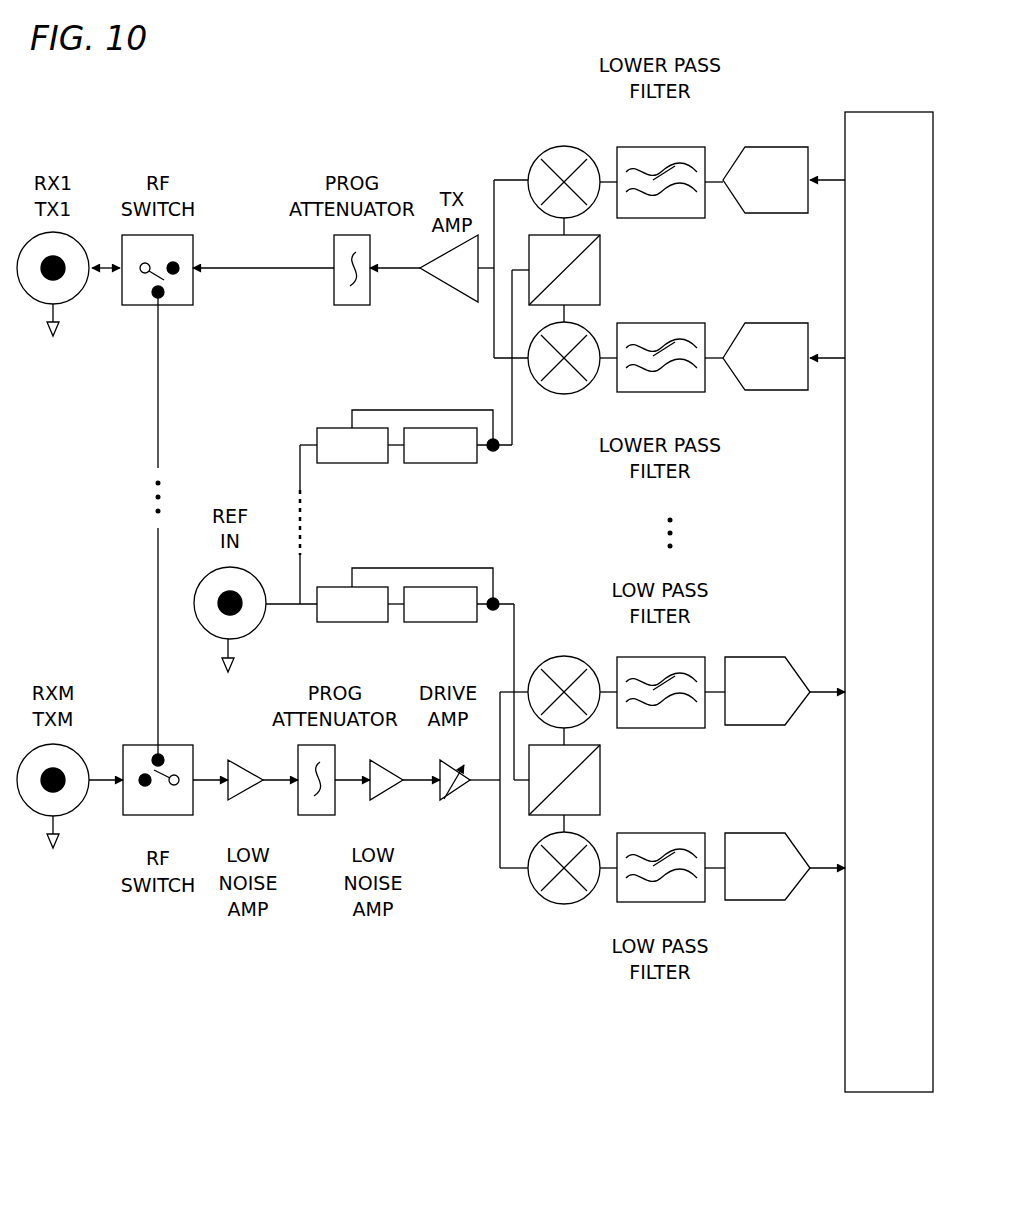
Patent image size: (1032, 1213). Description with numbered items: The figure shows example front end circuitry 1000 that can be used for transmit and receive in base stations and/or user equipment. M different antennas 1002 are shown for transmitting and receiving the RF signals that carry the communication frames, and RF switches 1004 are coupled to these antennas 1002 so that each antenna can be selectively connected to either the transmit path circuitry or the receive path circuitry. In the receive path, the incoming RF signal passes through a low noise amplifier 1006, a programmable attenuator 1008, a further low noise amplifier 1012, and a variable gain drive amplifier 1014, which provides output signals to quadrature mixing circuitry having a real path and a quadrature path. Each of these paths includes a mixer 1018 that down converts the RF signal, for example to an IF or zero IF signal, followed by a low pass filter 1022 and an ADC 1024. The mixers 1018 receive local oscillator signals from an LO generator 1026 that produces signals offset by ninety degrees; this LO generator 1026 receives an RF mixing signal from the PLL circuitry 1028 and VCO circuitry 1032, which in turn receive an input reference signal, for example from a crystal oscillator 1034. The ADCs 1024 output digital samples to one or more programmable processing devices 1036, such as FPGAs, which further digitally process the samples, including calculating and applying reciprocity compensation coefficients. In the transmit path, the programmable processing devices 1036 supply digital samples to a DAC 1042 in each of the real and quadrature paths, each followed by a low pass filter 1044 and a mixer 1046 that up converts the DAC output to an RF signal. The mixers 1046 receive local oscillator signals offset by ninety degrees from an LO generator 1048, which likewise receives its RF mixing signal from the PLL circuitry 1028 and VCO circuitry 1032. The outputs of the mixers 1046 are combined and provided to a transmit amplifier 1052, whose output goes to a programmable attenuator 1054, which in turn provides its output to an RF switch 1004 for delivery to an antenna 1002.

The front end circuitry 1000 is at (850, 70).
The antennas 1002 is at (70, 302).
The RF switches 1004 is at (175, 305).
The low noise amplifier 1006 is at (230, 800).
The programmable attenuator 1008 is at (300, 815).
The further low noise amplifier 1012 is at (372, 800).
The variable gain drive amplifier 1014 is at (440, 800).
The mixer 1018 is at (564, 656).
The low pass filter 1022 is at (617, 728).
The ADC 1024 is at (727, 725).
The LO generator 1026 is at (600, 780).
The PLL circuitry 1028 is at (318, 463).
The VCO circuitry 1032 is at (406, 463).
The crystal oscillator 1034 is at (246, 636).
The programmable processing devices 1036 is at (889, 602).
The DAC 1042 is at (755, 213).
The low pass filter 1044 is at (617, 218).
The mixer 1046 is at (564, 146).
The LO generator 1048 is at (600, 270).
The transmit amplifier 1052 is at (478, 296).
The programmable attenuator 1054 is at (366, 305).